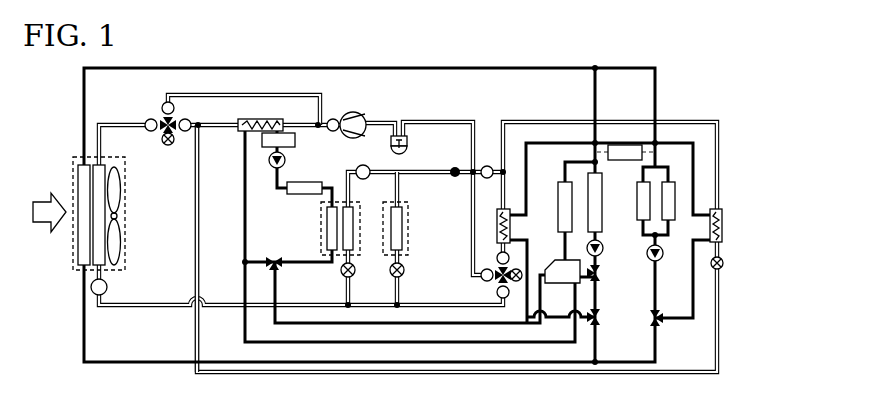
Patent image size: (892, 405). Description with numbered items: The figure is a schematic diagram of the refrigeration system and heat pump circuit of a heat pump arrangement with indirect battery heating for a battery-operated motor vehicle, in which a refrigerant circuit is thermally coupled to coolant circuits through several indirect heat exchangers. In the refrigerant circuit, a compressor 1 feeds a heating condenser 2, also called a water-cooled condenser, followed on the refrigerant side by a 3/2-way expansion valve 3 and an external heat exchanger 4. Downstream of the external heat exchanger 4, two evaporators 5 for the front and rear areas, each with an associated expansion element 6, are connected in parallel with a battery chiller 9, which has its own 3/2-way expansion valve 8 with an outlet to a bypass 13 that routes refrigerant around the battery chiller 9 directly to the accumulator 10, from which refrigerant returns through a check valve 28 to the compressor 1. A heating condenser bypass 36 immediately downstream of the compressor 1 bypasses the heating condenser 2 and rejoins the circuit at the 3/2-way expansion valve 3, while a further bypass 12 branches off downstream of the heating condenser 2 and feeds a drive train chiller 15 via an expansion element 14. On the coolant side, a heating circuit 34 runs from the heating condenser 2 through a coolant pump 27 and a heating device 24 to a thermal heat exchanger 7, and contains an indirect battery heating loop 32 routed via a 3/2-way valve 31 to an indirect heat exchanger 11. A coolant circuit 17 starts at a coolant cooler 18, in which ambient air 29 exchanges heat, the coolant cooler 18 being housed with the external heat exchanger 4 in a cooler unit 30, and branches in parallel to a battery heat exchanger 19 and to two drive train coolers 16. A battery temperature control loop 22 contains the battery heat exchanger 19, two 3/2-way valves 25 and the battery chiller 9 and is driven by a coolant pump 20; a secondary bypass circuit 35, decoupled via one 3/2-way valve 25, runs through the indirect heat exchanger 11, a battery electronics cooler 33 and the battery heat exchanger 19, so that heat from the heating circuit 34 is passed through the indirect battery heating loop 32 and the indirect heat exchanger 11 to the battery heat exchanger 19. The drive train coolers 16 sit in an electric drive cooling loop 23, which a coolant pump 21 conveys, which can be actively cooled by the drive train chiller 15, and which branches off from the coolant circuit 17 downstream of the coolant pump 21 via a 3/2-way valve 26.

The compressor 1 is at (364, 113).
The heating condenser 2 is at (290, 117).
The 3/2-way expansion valve 3 is at (155, 117).
The external heat exchanger 4 is at (106, 263).
The evaporator 5 is at (348, 252).
The expansion element 6 is at (355, 273).
The thermal heat exchanger 7 is at (328, 225).
The 3/2-way expansion valve 8 is at (505, 300).
The battery chiller 9 is at (496, 215).
The accumulator 10 is at (404, 152).
The indirect heat exchanger 11 is at (565, 283).
The bypass 12 is at (196, 215).
The bypass 13 is at (468, 242).
The expansion element 14 is at (719, 270).
The drive train chiller 15 is at (722, 218).
The drive train cooler 16 is at (637, 196).
The coolant circuit 17 is at (163, 360).
The coolant cooler 18 is at (80, 250).
The battery heat exchanger 19 is at (602, 210).
The coolant pump 20 is at (604, 252).
The coolant pump 21 is at (663, 253).
The battery temperature control loop 22 is at (528, 152).
The electric drive cooling loop 23 is at (693, 292).
The heating device 24 is at (303, 182).
The 3/2-way valve 25 is at (600, 283).
The 3/2-way valve 26 is at (660, 326).
The coolant pump 27 is at (272, 168).
The check valve 28 is at (455, 166).
The ambient air 29 is at (40, 195).
The cooler unit 30 is at (70, 150).
The 3/2-way valve 31 is at (272, 257).
The indirect battery heating loop 32 is at (440, 374).
The battery electronics cooler 33 is at (558, 218).
The heating circuit 34 is at (247, 200).
The secondary bypass circuit 35 is at (563, 249).
The heating condenser bypass 36 is at (228, 96).